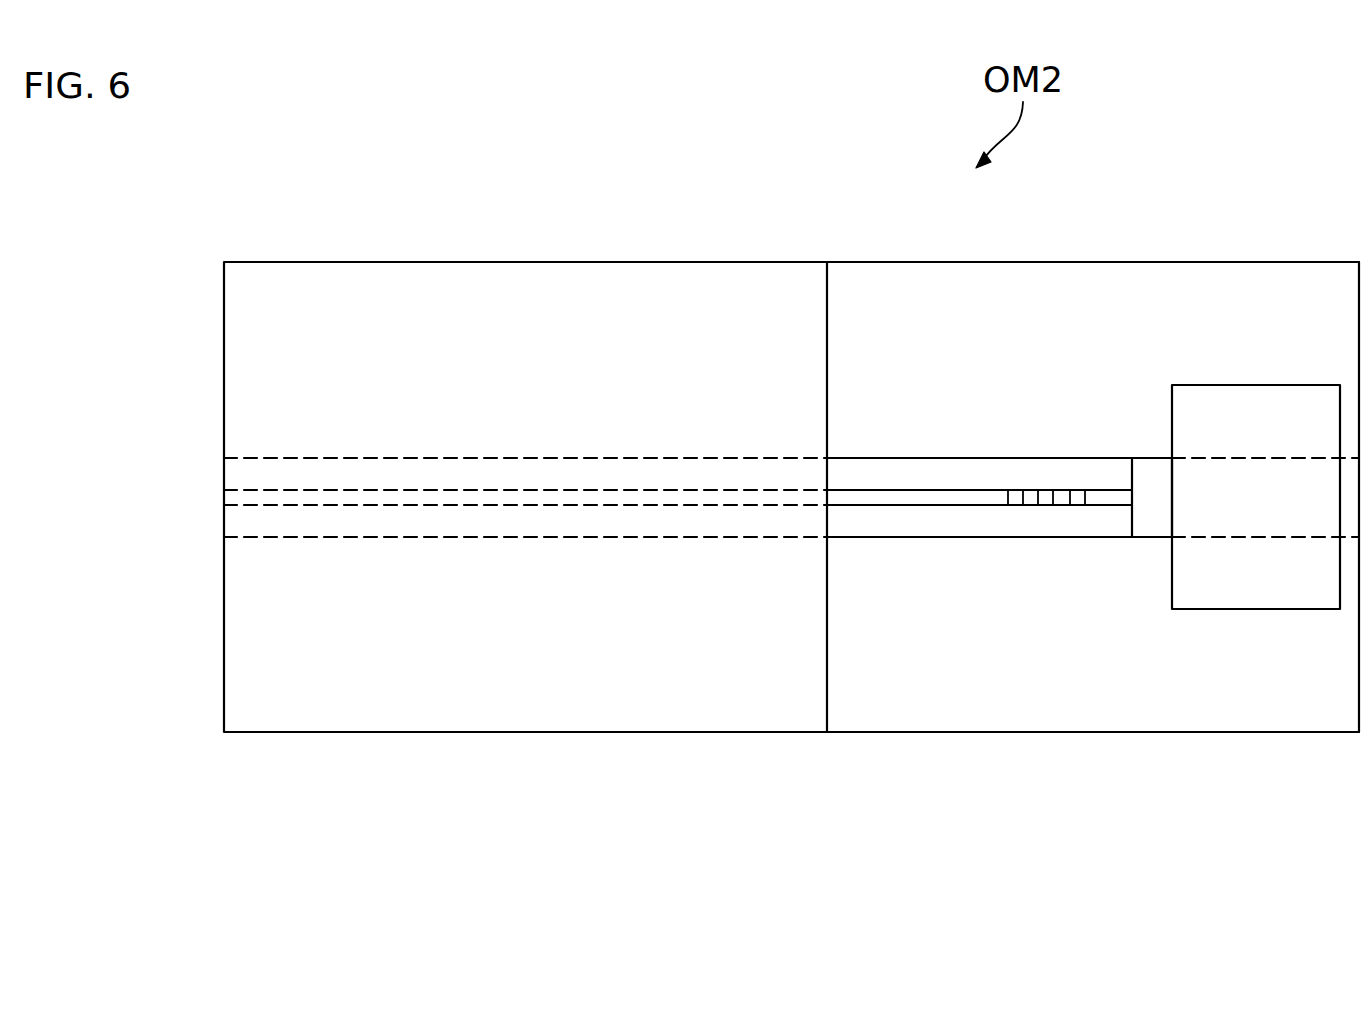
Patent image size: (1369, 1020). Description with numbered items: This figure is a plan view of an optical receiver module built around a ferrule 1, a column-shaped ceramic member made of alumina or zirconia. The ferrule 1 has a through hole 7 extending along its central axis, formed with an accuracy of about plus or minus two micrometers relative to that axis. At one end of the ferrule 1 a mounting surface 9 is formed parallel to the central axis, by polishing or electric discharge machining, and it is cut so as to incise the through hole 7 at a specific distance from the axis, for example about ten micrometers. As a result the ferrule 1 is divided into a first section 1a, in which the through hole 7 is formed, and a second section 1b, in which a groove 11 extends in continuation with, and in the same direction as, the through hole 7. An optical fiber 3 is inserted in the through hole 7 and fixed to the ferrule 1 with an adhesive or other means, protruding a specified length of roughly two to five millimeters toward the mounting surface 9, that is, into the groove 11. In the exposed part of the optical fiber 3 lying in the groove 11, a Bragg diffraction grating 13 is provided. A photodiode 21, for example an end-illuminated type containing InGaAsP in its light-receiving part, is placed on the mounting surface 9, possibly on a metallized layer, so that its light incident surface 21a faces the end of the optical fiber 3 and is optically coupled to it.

The ferrule 1 is at (218, 572).
The first section 1a is at (541, 734).
The second section 1b is at (1075, 734).
The optical fiber 3 is at (887, 540).
The through hole 7 is at (528, 462).
The mounting surface 9 is at (1137, 290).
The groove 11 is at (1147, 466).
The Bragg diffraction grating 13 is at (1093, 510).
The photodiode 21 is at (1281, 385).
The light incident surface 21a is at (1168, 507).